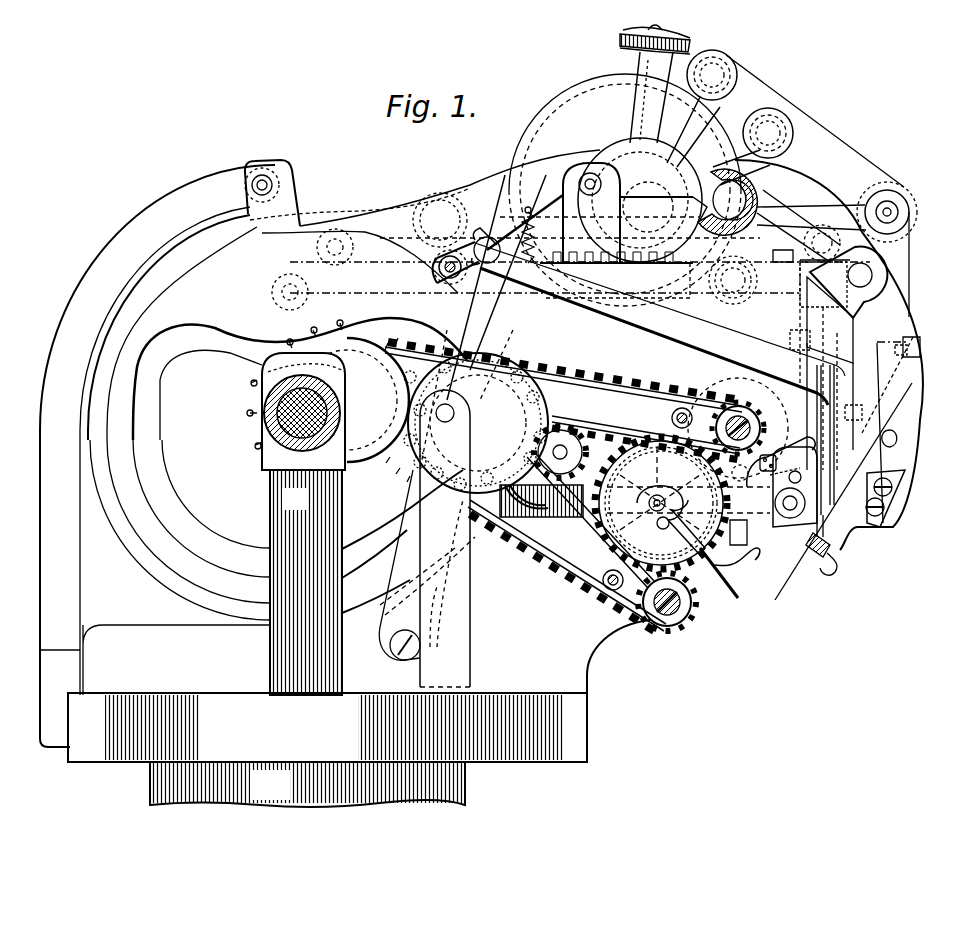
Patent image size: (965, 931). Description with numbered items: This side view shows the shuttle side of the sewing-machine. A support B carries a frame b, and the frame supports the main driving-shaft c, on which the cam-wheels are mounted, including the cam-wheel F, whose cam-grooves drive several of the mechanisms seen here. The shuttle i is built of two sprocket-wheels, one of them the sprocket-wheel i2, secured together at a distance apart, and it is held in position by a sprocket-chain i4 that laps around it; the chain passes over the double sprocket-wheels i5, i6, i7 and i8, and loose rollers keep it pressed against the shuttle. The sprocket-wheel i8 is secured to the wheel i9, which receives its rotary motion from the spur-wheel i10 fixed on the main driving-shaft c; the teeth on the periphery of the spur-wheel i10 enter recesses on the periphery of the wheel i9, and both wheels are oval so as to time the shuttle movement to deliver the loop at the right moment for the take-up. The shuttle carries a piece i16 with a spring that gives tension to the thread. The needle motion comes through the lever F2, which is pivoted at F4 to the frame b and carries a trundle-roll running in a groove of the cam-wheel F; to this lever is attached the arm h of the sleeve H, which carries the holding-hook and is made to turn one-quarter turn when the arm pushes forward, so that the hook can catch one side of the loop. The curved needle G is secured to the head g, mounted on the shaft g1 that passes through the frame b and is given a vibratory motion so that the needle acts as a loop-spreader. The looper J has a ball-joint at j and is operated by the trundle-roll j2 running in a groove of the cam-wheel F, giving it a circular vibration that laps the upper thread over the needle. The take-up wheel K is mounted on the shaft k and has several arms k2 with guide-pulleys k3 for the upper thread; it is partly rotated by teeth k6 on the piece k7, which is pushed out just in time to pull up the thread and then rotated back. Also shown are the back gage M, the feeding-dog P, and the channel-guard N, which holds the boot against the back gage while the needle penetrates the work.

The support B is at (307, 784).
The frame b is at (327, 696).
The cam-wheel F is at (199, 410).
The main driving-shaft c is at (262, 430).
The spur-wheel i10 is at (328, 401).
The double sprocket-wheel i8 is at (430, 370).
The wheel i9 is at (478, 423).
The lever F2 is at (483, 322).
The pivot F4 is at (390, 645).
The sprocket-chain i4 is at (605, 383).
The sleeve H is at (560, 517).
The double sprocket-wheel i6 is at (598, 445).
The double sprocket-wheel i7 is at (764, 428).
The shuttle i is at (682, 503).
The piece i16 is at (660, 520).
The double sprocket-wheel i5 is at (688, 606).
The back gage M is at (750, 556).
The arm h is at (739, 547).
The sprocket-wheel i2 is at (735, 510).
The head g is at (808, 492).
The shaft g1 is at (790, 518).
The curved needle G is at (770, 505).
The looper J is at (852, 545).
The feeding-dog P is at (832, 565).
The channel-guard N is at (843, 492).
The take-up wheel K is at (620, 152).
The shaft k is at (613, 240).
The arms k2 is at (700, 118).
The guide-pulleys k3 is at (670, 36).
The ball-joint j is at (807, 215).
The teeth k6 is at (540, 235).
The piece k7 is at (641, 316).
The trundle-roll j2 is at (435, 270).